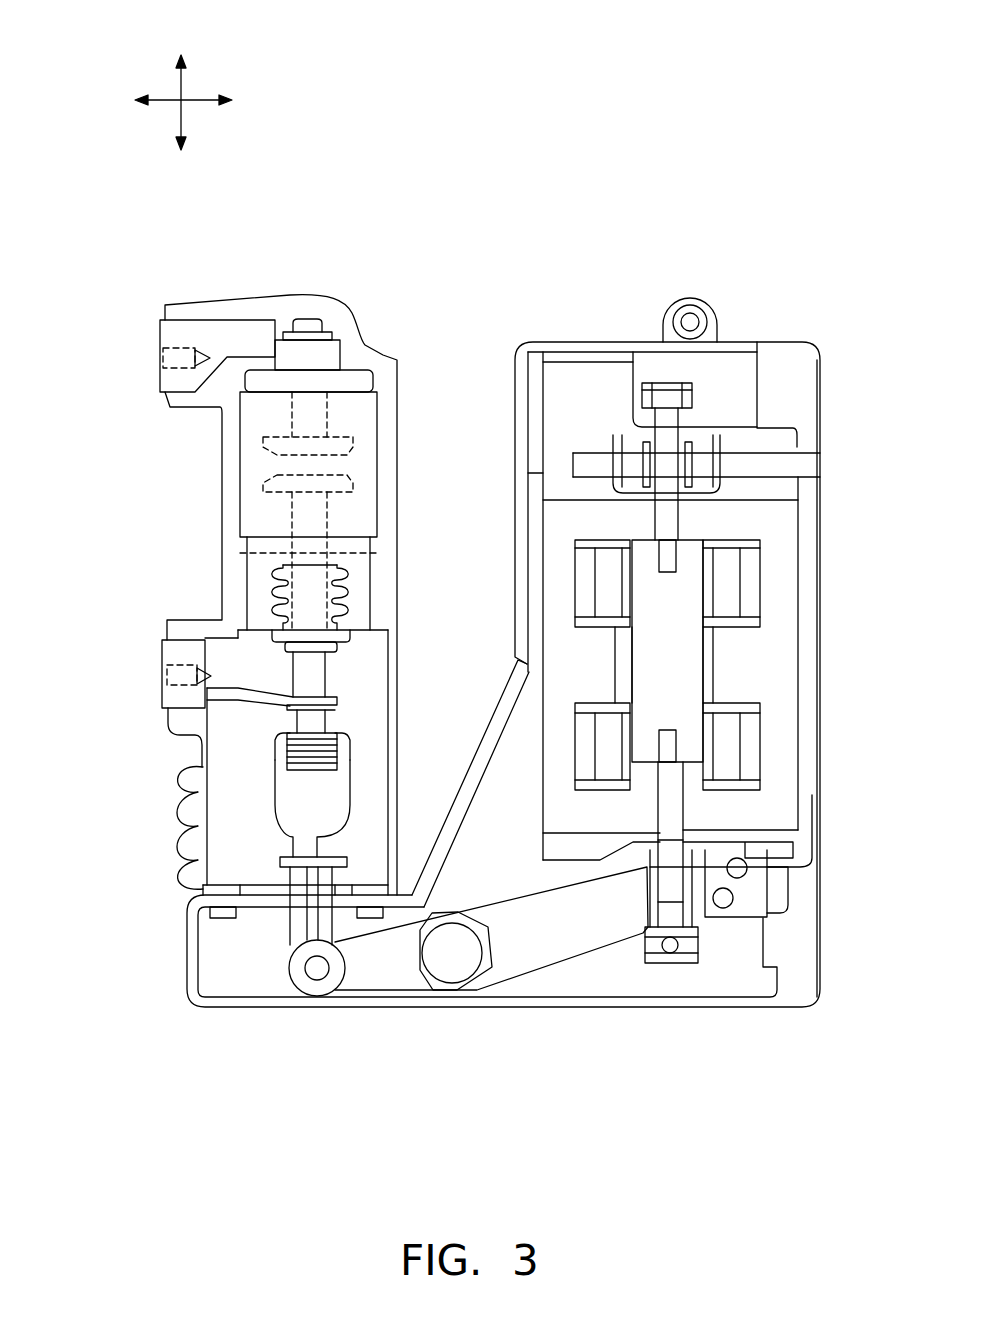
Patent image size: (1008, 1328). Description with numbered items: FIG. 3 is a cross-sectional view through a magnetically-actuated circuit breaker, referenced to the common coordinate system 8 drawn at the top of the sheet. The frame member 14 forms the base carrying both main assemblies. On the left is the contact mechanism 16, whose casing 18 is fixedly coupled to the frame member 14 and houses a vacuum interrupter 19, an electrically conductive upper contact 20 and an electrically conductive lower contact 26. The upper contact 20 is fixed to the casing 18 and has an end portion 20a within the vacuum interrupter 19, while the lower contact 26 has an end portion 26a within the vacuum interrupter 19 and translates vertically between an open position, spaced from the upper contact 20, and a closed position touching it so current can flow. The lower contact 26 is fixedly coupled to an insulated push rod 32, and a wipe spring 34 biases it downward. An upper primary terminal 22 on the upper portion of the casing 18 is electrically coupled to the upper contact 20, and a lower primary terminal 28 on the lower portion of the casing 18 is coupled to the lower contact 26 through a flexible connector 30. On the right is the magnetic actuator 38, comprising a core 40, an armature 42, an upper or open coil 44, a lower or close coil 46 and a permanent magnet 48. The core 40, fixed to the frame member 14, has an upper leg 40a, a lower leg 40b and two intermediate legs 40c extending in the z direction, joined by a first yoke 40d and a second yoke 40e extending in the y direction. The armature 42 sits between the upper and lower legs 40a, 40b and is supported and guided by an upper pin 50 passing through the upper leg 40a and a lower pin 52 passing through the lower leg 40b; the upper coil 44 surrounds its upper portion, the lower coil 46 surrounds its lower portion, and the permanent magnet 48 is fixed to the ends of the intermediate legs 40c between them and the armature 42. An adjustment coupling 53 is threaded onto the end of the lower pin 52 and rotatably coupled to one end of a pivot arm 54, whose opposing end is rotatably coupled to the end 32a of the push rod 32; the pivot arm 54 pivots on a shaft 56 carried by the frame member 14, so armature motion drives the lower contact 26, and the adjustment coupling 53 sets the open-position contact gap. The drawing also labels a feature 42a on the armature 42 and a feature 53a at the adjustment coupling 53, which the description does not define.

The coordinate system 8 is at (212, 45).
The frame member 14 is at (190, 981).
The contact mechanism 16 is at (358, 298).
The casing 18 is at (235, 583).
The vacuum interrupter 19 is at (265, 520).
The upper contact 20 is at (343, 409).
The end portion 20a is at (265, 440).
The upper primary terminal 22 is at (187, 330).
The lower contact 26 is at (346, 501).
The end portion 26a is at (262, 480).
The lower primary terminal 28 is at (180, 655).
The flexible connector 30 is at (202, 738).
The insulated push rod 32 is at (310, 813).
The end of the push rod 32a is at (302, 982).
The wipe spring 34 is at (288, 760).
The magnetic actuator 38 is at (756, 308).
The core 40 is at (530, 763).
The upper leg 40a is at (670, 516).
The lower leg 40b is at (740, 827).
The intermediate legs 40c is at (860, 660).
The first yoke 40d is at (553, 575).
The second yoke 40e is at (788, 585).
The armature 42 is at (687, 653).
The armature slot 42a is at (648, 770).
The upper coil 44 is at (730, 575).
The lower coil 46 is at (720, 760).
The permanent magnet 48 is at (713, 680).
The upper pin 50 is at (667, 520).
The lower pin 52 is at (672, 815).
The adjustment coupling 53 is at (714, 947).
The clevis pin 53a is at (673, 963).
The pivot arm 54 is at (486, 888).
The shaft 56 is at (453, 973).